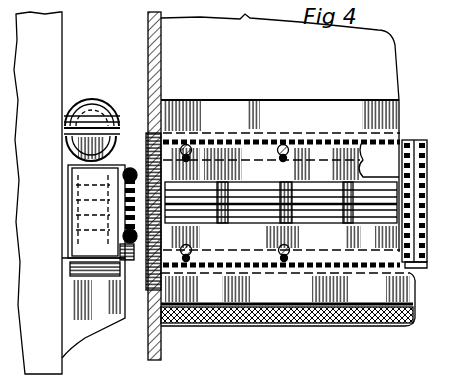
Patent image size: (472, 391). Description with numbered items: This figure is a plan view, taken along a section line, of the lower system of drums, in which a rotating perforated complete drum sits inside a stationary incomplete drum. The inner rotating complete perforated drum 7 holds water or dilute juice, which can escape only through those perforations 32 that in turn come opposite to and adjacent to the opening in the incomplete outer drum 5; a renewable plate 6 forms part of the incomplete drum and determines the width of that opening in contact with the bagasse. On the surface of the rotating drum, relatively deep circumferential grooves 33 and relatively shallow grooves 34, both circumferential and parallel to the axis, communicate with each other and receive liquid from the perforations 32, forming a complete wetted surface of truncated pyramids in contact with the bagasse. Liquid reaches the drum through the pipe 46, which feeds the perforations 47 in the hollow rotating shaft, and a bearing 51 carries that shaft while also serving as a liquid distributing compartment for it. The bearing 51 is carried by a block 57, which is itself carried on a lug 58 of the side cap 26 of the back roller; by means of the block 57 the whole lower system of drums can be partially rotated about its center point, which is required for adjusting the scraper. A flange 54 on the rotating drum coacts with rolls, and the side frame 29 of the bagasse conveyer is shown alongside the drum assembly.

The incomplete outer drum 5 is at (288, 170).
The renewable plate 6 is at (303, 138).
The inner rotating complete perforated drum 7 is at (415, 258).
The side cap 26 is at (38, 193).
The side frame 29 is at (149, 74).
The perforations 32 is at (198, 182).
The deep circumferential grooves 33 is at (230, 182).
The shallow grooves 34 is at (338, 130).
The pipe 46 is at (92, 100).
The perforations 47 is at (78, 207).
The bearing 51 is at (97, 152).
The flange 54 is at (127, 252).
The bearing block 57 is at (152, 272).
The lug 58 is at (97, 328).